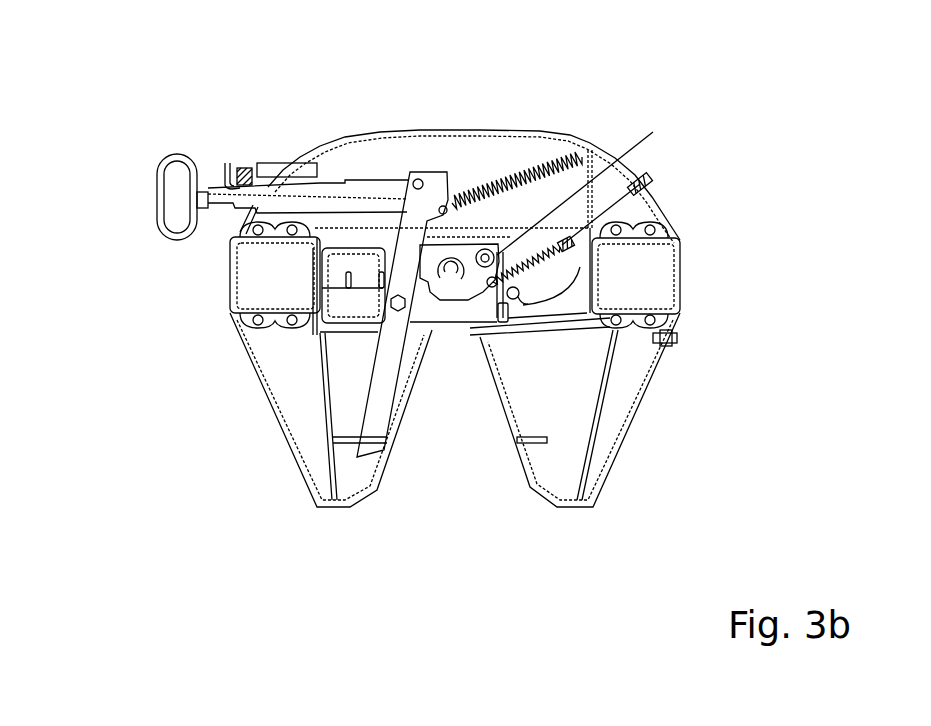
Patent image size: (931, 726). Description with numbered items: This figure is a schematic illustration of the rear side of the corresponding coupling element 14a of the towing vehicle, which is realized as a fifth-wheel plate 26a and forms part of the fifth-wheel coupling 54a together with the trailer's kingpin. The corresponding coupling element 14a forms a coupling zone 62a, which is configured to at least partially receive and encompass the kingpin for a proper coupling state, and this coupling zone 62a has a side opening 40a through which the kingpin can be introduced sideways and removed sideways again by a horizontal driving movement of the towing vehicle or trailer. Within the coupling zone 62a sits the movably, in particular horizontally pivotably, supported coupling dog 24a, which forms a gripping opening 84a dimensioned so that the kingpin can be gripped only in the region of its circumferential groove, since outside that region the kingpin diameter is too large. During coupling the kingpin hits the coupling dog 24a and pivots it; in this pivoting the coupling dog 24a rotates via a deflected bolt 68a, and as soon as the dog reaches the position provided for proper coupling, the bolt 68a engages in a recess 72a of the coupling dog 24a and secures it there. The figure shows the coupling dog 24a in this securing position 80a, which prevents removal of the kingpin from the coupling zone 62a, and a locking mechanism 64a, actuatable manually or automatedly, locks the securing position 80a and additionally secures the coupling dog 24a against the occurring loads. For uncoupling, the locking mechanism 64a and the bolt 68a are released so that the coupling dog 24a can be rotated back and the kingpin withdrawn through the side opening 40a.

The corresponding coupling element 14a is at (217, 360).
The coupling dog 24a is at (452, 268).
The fifth-wheel plate 26a is at (610, 420).
The side opening 40a is at (455, 402).
The fifth-wheel coupling 54a is at (168, 306).
The coupling zone 62a is at (472, 252).
The locking mechanism 64a is at (431, 312).
The bolt 68a is at (650, 183).
The recess 72a is at (653, 132).
The securing position 80a is at (490, 250).
The gripping opening 84a is at (426, 267).